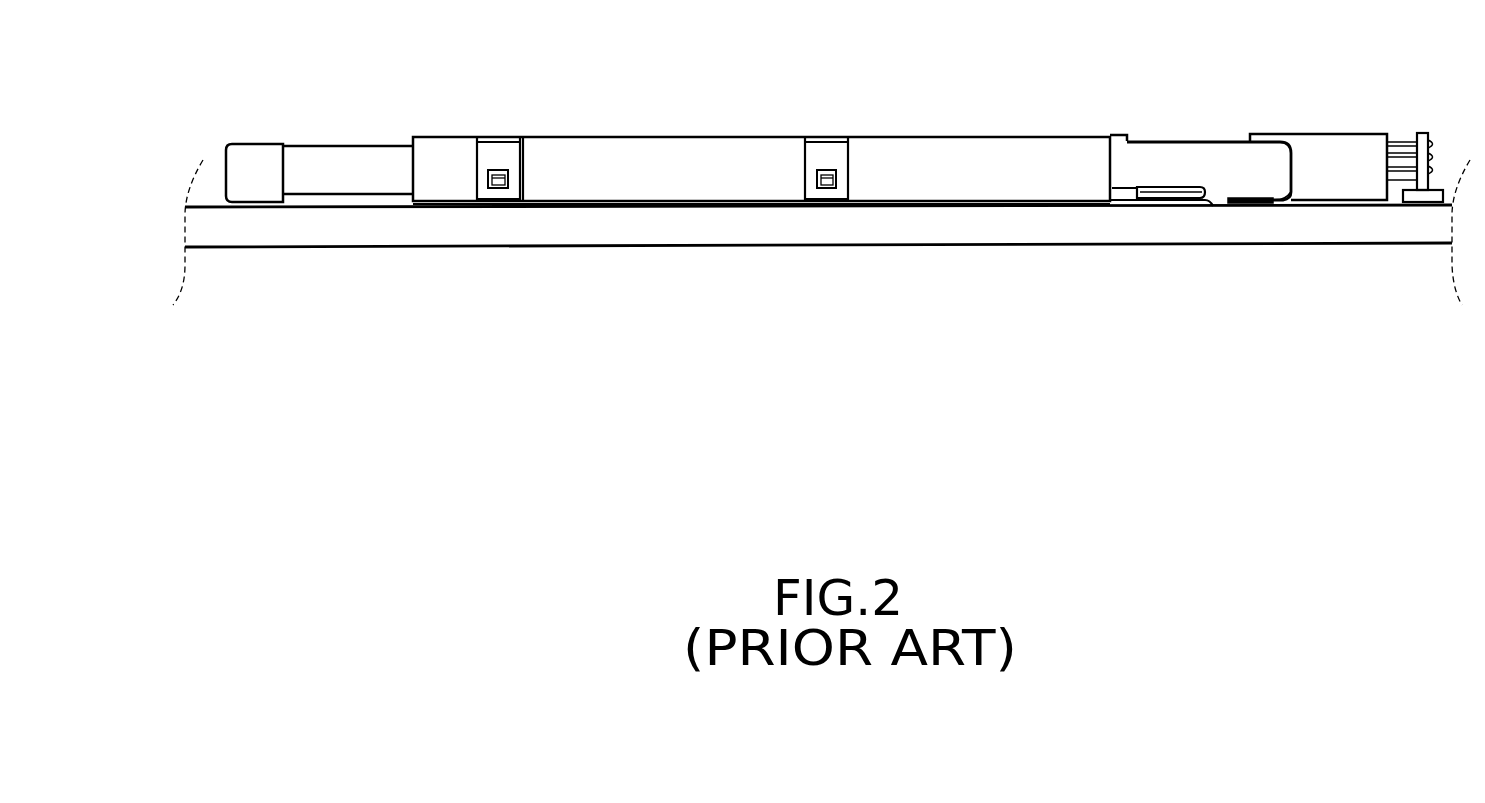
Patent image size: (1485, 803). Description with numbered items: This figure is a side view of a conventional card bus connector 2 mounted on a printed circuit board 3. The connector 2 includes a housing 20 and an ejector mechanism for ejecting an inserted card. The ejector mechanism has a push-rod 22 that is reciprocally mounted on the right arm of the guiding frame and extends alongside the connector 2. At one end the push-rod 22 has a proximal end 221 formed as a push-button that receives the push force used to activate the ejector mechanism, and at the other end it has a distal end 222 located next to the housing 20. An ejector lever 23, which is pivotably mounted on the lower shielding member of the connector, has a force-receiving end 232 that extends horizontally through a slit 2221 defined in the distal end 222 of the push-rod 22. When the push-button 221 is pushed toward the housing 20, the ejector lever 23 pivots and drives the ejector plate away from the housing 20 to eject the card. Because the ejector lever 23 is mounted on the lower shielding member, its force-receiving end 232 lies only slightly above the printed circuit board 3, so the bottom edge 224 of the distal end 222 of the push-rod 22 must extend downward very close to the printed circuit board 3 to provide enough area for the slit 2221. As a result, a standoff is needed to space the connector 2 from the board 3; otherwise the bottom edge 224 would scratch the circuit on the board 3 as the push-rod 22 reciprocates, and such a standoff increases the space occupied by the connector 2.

The card bus connector 2 is at (947, 145).
The printed circuit board 3 is at (955, 232).
The housing 20 is at (1335, 150).
The push-rod 22 is at (1167, 155).
The ejector lever 23 is at (1262, 197).
The proximal end 221 is at (247, 160).
The distal end 222 is at (1276, 182).
The bottom edge 224 is at (1218, 205).
The force-receiving end 232 is at (1245, 197).
The slit 2221 is at (1227, 205).